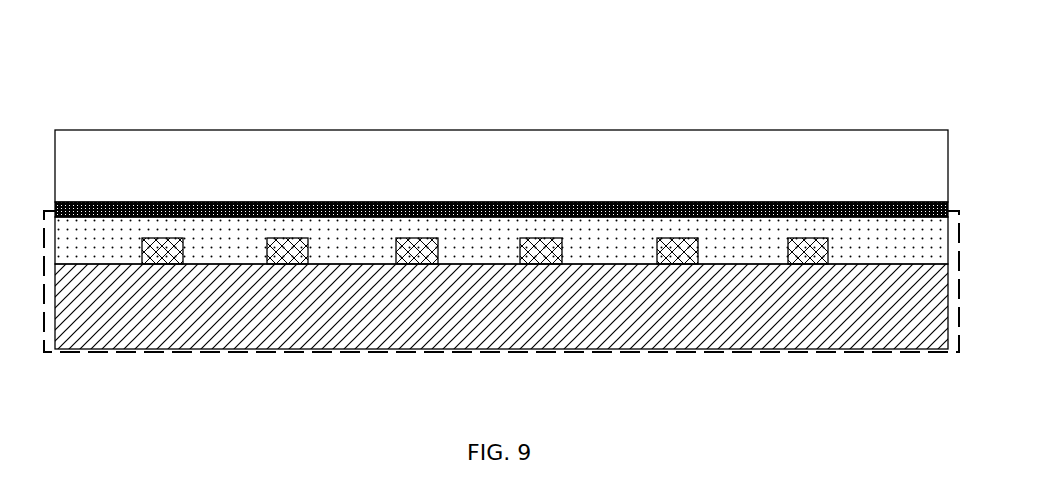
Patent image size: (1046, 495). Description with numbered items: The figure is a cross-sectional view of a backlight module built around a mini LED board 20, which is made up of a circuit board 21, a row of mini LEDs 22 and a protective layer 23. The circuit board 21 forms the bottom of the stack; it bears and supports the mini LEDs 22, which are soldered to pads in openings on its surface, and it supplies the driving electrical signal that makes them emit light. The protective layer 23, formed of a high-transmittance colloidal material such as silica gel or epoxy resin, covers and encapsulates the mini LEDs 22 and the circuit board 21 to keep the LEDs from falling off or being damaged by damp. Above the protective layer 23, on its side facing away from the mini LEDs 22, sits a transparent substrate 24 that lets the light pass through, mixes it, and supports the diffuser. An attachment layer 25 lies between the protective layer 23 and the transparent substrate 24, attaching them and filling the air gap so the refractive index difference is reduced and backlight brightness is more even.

The mini LED board 20 is at (568, 352).
The circuit board 21 is at (401, 315).
The mini LEDs 22 is at (268, 240).
The protective layer 23 is at (412, 228).
The transparent substrate 24 is at (737, 178).
The attachment layer 25 is at (542, 205).